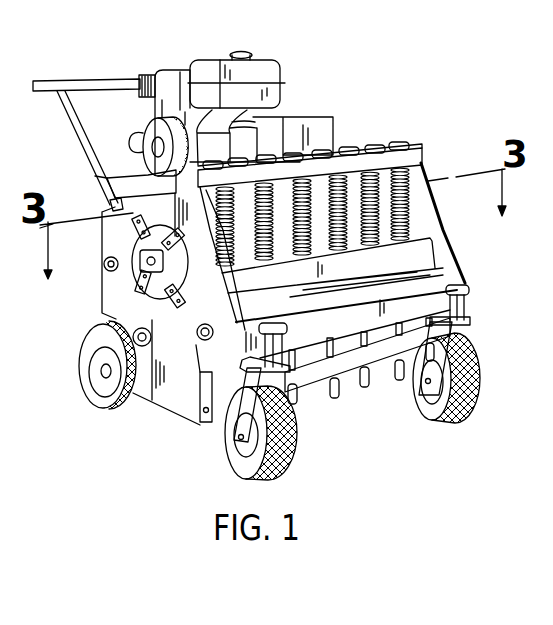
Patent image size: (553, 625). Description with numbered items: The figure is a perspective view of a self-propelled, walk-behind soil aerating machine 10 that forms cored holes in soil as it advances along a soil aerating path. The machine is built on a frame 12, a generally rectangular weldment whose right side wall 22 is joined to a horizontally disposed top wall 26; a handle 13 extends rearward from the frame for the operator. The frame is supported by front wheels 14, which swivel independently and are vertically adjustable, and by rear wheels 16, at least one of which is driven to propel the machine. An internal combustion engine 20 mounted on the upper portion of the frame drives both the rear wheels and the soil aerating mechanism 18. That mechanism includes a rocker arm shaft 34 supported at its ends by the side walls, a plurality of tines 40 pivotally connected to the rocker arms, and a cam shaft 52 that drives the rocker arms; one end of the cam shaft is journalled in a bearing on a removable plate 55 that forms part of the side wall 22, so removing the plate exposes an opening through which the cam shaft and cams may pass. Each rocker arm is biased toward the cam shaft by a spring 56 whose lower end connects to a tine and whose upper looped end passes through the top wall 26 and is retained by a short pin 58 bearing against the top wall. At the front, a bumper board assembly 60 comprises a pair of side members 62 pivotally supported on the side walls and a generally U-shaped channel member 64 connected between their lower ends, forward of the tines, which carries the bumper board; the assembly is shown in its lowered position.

The soil aerating machine 10 is at (382, 90).
The frame 12 is at (143, 415).
The handle 13 is at (102, 78).
The front wheels 14 is at (480, 383).
The rear wheels 16 is at (82, 352).
The soil aerating mechanism 18 is at (424, 219).
The internal combustion engine 20 is at (150, 108).
The right side wall 22 is at (115, 297).
The top wall 26 is at (143, 180).
The rocker arm shaft 34 is at (104, 268).
The tines 40 is at (397, 378).
The cam shaft 52 is at (148, 305).
The removable plate 55 is at (140, 242).
The spring 56 is at (400, 172).
The short pin 58 is at (300, 155).
The bumper board assembly 60 is at (326, 407).
The side members 62 is at (197, 417).
The U-shaped channel member 64 is at (410, 355).